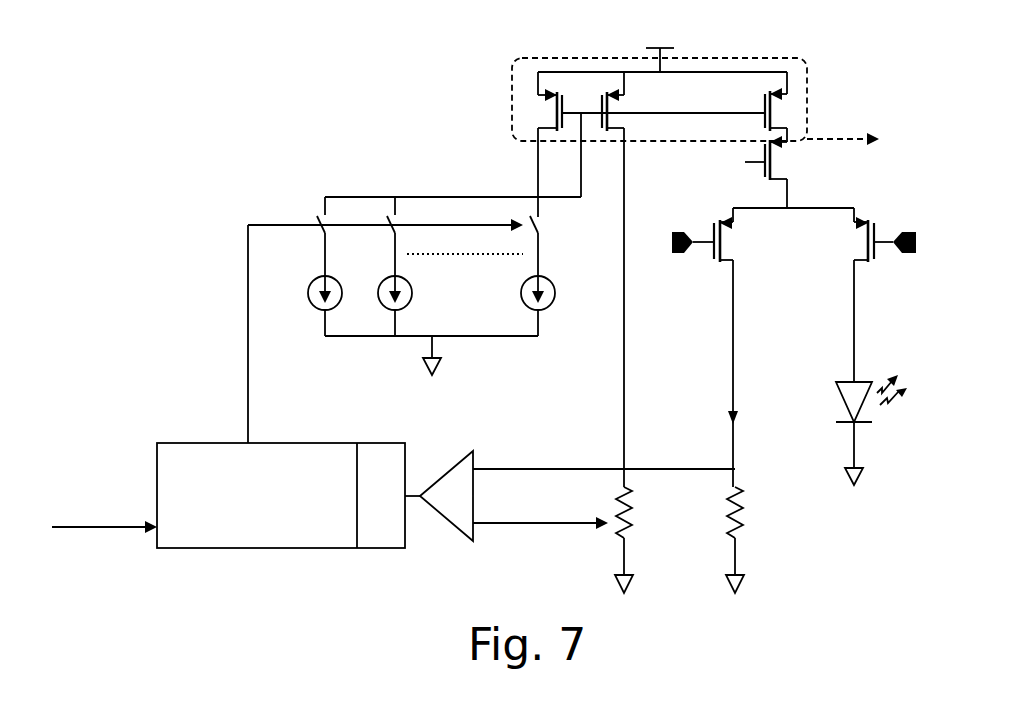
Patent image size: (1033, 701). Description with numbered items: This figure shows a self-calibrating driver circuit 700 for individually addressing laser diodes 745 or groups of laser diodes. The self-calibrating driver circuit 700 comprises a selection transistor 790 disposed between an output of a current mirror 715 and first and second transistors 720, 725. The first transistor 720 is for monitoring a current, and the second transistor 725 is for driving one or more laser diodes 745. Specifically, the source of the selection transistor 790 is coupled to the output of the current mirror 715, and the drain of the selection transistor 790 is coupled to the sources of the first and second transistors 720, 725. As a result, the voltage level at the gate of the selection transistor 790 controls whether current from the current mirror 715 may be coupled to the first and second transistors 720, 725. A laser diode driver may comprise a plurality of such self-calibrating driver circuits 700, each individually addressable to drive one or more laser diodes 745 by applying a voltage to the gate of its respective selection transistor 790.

The self-calibrating driver circuit 700 is at (246, 60).
The current mirror 715 is at (568, 58).
The selection transistor 790 is at (770, 142).
The first transistor 720 is at (713, 220).
The second transistor 725 is at (870, 217).
The laser diode 745 is at (838, 400).